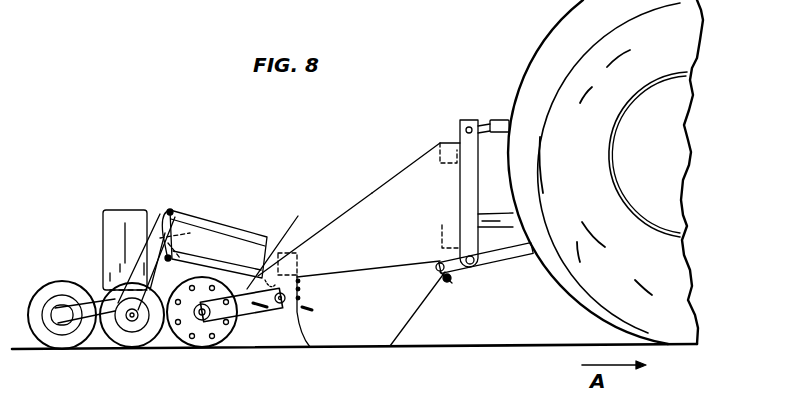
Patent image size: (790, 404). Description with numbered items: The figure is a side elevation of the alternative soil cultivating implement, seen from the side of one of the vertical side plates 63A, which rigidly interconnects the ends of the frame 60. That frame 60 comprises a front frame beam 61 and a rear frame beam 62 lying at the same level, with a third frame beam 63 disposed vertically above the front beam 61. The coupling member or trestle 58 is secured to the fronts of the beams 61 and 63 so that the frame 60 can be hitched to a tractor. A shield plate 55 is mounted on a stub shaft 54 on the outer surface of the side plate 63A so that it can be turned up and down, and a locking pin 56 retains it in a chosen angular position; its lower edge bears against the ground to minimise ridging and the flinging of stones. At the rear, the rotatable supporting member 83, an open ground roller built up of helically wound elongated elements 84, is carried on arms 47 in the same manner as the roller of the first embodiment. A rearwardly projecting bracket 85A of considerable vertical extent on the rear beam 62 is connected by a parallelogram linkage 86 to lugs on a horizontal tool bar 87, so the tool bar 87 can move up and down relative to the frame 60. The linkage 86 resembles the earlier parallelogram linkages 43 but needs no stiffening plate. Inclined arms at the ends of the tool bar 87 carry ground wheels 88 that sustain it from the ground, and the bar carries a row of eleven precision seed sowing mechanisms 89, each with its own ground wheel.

The parallelogram linkage 43 is at (446, 292).
The arm 47 is at (245, 312).
The stub shaft 54 is at (437, 268).
The shield plate 55 is at (378, 268).
The locking pin 56 is at (303, 307).
The coupling member or trestle 58 is at (460, 180).
The frame 60 is at (412, 153).
The frame beam 61 is at (441, 225).
The rear frame beam 62 is at (313, 256).
The third frame beam 63 is at (447, 140).
The side plate 63A is at (363, 197).
The rotatable supporting member 83 is at (206, 349).
The elongated element 84 is at (222, 332).
The bracket 85A is at (282, 242).
The parallelogram linkage 86 is at (240, 200).
The tool bar 87 is at (190, 245).
The ground wheel 88 is at (133, 342).
The precision seed sowing mechanism 89 is at (47, 290).